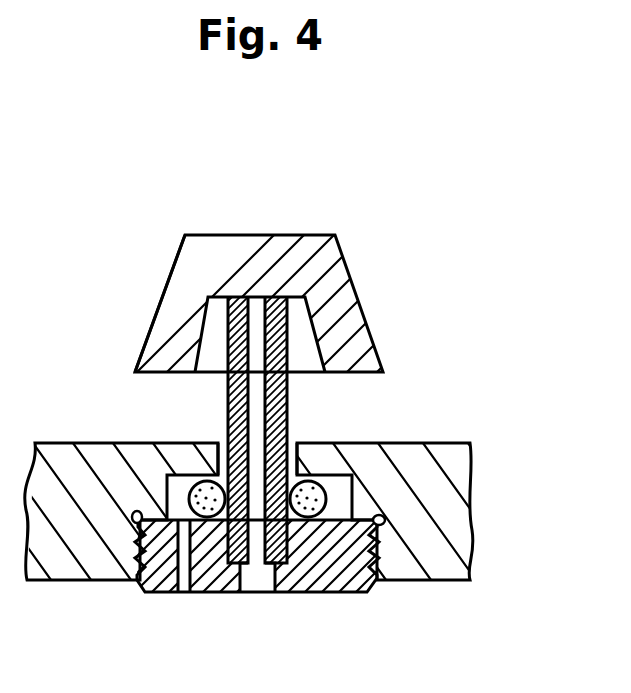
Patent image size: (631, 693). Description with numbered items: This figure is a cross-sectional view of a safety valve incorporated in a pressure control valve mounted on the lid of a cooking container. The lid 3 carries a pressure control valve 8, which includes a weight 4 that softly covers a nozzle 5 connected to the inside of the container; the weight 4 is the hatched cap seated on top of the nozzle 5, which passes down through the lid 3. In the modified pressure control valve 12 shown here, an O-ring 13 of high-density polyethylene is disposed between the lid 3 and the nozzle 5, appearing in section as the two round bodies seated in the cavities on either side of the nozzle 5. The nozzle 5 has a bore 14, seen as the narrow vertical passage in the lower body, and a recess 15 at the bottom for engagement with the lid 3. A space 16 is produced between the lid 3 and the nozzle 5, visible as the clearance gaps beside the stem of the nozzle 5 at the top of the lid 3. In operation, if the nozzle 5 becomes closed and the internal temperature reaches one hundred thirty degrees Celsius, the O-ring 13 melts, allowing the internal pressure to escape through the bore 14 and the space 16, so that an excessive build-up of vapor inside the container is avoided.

The lid 3 is at (82, 443).
The weight 4 is at (313, 235).
The nozzle 5 is at (290, 407).
The pressure control valve 8 is at (120, 340).
The modified pressure control valve 12 is at (353, 597).
The O-ring 13 is at (322, 488).
The bore 14 is at (180, 593).
The recess 15 is at (258, 590).
The space 16 is at (290, 442).